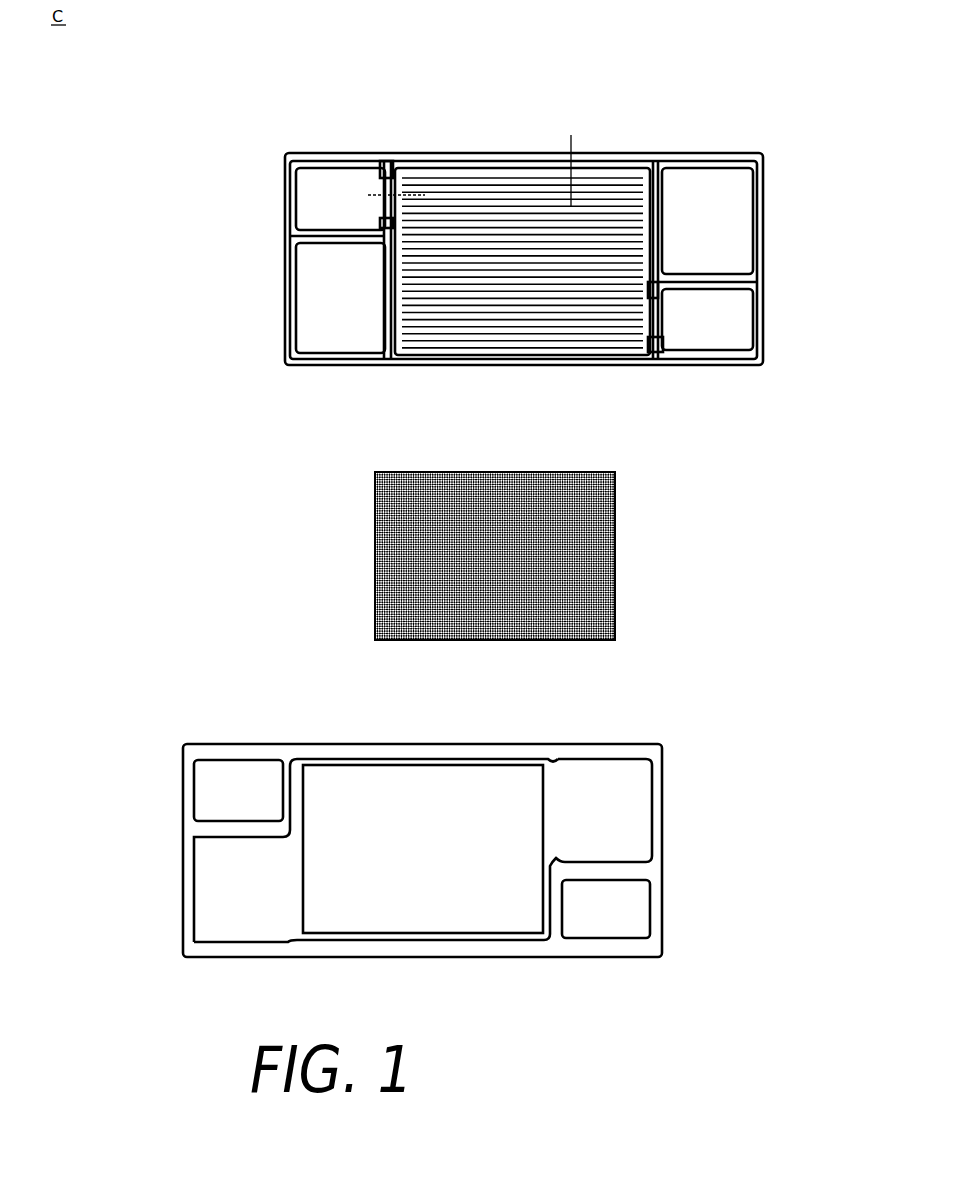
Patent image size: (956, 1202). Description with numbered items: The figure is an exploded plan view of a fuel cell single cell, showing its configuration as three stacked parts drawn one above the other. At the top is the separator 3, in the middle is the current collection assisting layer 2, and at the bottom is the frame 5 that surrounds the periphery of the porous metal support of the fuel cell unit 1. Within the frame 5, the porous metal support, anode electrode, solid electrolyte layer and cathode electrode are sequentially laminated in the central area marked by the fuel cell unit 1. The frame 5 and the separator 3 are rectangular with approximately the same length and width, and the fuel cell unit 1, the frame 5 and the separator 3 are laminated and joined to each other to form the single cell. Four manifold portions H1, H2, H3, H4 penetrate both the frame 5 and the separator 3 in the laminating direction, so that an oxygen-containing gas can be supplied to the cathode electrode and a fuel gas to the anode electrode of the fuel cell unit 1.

The fuel cell unit 1 is at (425, 828).
The current collection assisting layer 2 is at (585, 458).
The separator 3 is at (646, 141).
The frame 5 is at (667, 752).
The manifold portion H1 is at (313, 198).
The manifold portion H2 is at (328, 310).
The manifold portion H3 is at (717, 230).
The manifold portion H4 is at (715, 317).